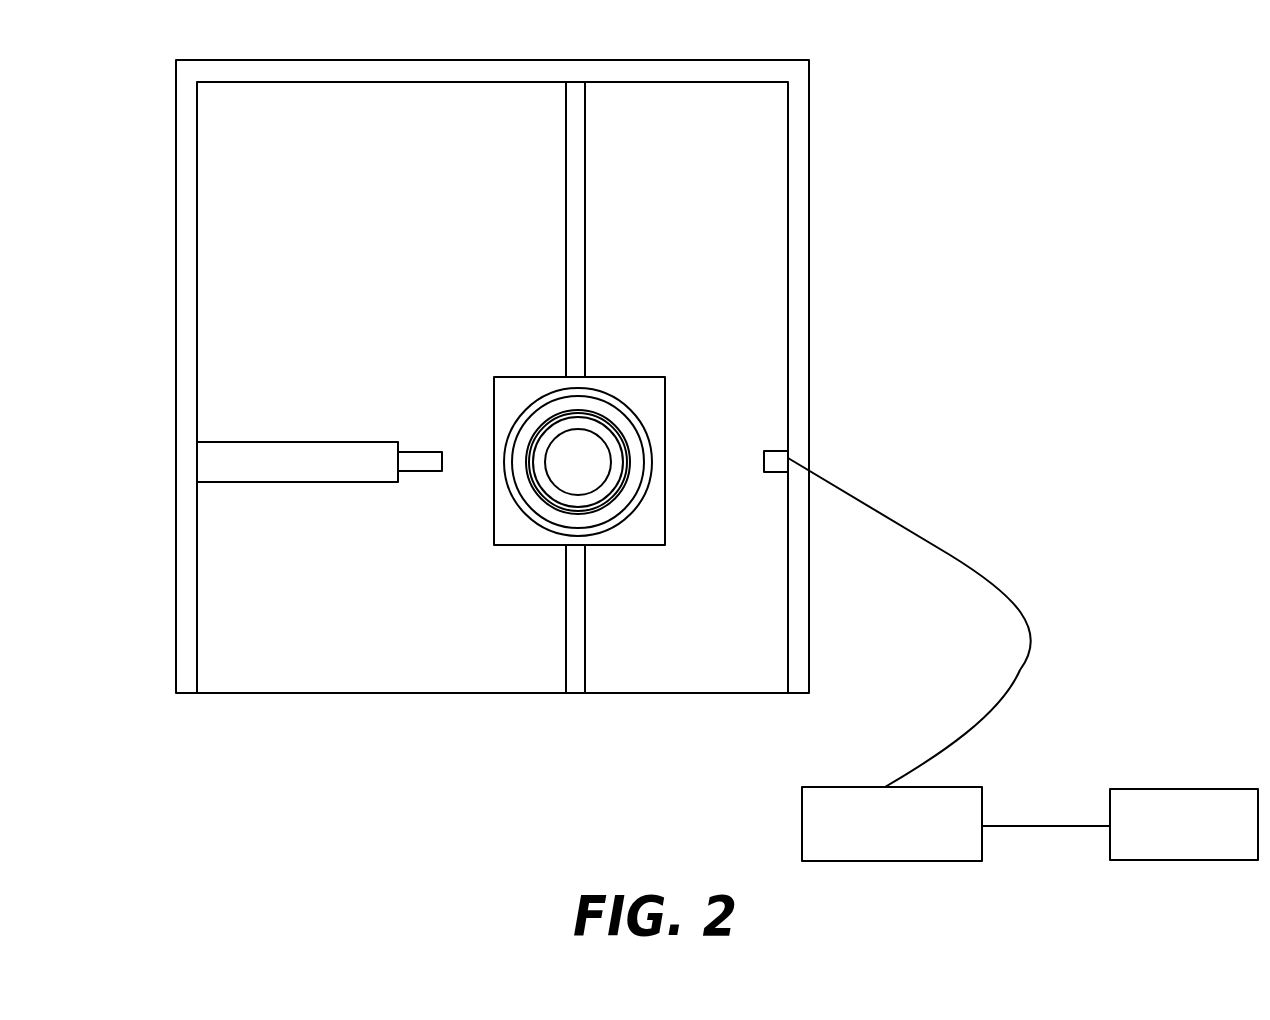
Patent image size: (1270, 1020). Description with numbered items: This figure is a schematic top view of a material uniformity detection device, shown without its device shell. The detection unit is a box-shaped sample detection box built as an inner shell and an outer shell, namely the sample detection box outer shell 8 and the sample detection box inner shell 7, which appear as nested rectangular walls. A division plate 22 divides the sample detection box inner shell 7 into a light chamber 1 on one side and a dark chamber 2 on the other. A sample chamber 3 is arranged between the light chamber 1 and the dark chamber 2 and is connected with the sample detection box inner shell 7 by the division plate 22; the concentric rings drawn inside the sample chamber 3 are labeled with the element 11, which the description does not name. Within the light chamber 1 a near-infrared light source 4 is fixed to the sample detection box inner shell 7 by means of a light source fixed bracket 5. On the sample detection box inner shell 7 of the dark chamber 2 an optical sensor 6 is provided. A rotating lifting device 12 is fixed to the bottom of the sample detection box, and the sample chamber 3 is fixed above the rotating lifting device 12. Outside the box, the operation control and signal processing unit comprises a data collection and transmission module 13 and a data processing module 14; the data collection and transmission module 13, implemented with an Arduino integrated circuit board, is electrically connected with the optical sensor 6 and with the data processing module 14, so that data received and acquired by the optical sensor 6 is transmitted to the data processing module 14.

The light chamber 1 is at (230, 414).
The dark chamber 2 is at (563, 376).
The sample chamber 3 is at (466, 376).
The near-infrared light source 4 is at (413, 448).
The light source fixed bracket 5 is at (247, 470).
The optical sensor 6 is at (770, 448).
The sample detection box inner shell 7 is at (788, 513).
The sample detection box outer shell 8 is at (809, 565).
The coil 11 is at (570, 412).
The rotating lifting device 12 is at (494, 381).
The data collection and transmission module 13 is at (802, 852).
The data processing module 14 is at (1118, 787).
The division plate 22 is at (585, 173).